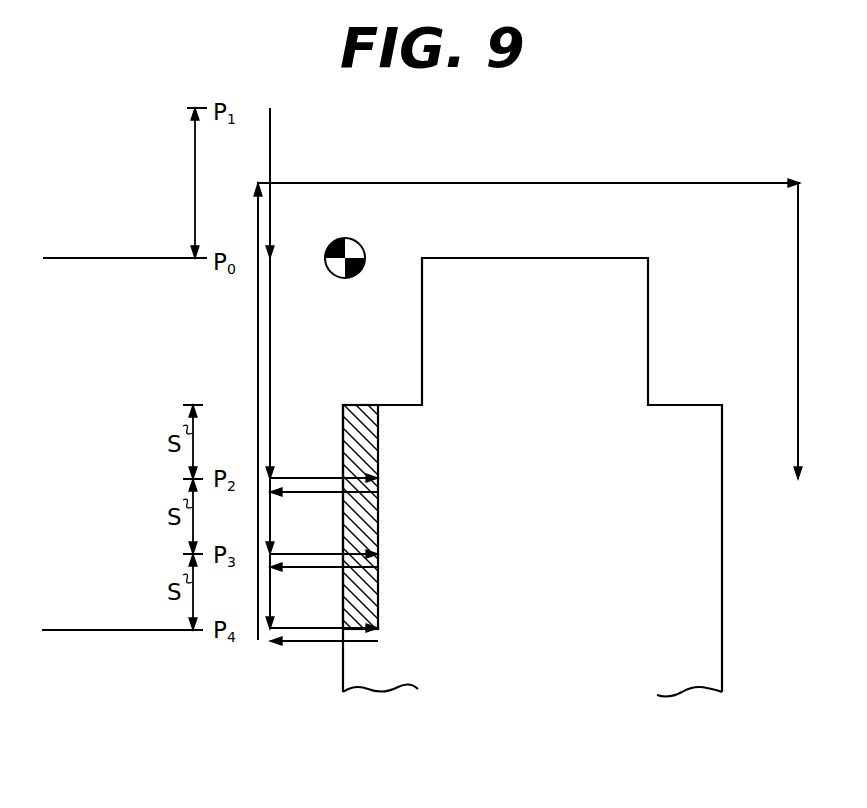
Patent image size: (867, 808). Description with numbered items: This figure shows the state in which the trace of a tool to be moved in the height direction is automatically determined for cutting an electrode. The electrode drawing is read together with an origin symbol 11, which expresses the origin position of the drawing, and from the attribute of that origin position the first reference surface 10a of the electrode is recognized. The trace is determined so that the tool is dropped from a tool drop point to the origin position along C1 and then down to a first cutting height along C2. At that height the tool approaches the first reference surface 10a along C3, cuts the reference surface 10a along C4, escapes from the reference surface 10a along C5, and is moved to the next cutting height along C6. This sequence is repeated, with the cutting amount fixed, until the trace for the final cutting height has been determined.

The origin symbol 11 is at (359, 243).
The first reference surface 10a is at (343, 665).
The tool drop trace to origin position C1 is at (271, 141).
The tool drop trace to first cutting height C2 is at (263, 346).
The tool approach trace C3 is at (313, 478).
The tool cutting trace C4 is at (378, 457).
The tool escape trace C5 is at (330, 492).
The tool movement trace to next cutting height C6 is at (270, 523).